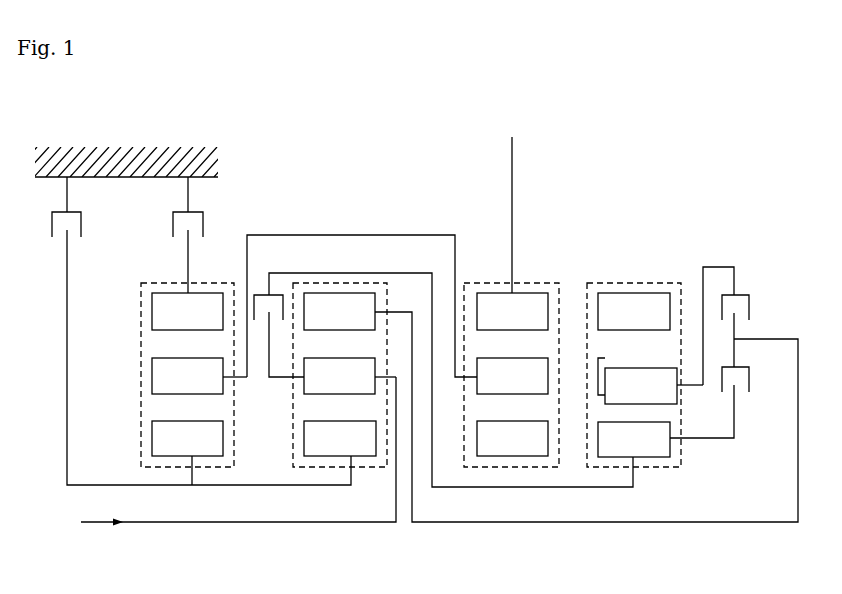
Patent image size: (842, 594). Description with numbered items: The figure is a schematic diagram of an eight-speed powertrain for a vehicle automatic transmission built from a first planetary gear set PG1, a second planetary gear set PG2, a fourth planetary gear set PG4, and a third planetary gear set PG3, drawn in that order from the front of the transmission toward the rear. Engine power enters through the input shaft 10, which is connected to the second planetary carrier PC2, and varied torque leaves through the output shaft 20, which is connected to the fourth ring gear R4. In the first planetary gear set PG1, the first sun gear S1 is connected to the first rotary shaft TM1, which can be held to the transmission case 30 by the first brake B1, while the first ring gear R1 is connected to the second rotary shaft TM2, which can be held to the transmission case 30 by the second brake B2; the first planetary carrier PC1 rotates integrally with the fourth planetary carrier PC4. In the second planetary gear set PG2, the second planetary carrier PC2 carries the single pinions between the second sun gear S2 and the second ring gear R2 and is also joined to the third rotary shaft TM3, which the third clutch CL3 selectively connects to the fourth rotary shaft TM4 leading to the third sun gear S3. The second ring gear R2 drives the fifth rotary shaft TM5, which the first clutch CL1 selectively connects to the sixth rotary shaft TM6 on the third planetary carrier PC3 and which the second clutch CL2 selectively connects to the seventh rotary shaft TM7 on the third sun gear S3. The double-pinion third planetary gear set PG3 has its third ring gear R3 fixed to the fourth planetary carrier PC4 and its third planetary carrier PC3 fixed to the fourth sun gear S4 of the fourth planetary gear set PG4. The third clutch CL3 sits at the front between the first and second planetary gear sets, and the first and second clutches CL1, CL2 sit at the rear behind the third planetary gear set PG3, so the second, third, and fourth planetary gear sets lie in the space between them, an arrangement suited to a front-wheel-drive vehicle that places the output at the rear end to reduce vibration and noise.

The input shaft 10 is at (98, 522).
The output shaft 20 is at (513, 173).
The transmission case 30 is at (135, 162).
The first brake B1 is at (49, 207).
The second brake B2 is at (200, 207).
The first clutch CL1 is at (754, 331).
The second clutch CL2 is at (754, 381).
The third clutch CL3 is at (440, 366).
The first planetary gear set PG1 is at (196, 429).
The second planetary gear set PG2 is at (320, 430).
The third planetary gear set PG3 is at (649, 430).
The fourth planetary gear set PG4 is at (472, 430).
The first sun gear S1 is at (187, 453).
The second sun gear S2 is at (340, 438).
The third sun gear S3 is at (634, 439).
The fourth sun gear S4 is at (512, 438).
The first planetary carrier PC1 is at (243, 378).
The second planetary carrier PC2 is at (283, 378).
The third planetary carrier PC3 is at (688, 387).
The fourth planetary carrier PC4 is at (457, 378).
The first ring gear R1 is at (187, 311).
The second ring gear R2 is at (339, 311).
The third ring gear R3 is at (634, 311).
The fourth ring gear R4 is at (512, 311).
The first rotary shaft TM1 is at (93, 483).
The second rotary shaft TM2 is at (188, 252).
The third rotary shaft TM3 is at (269, 345).
The fourth rotary shaft TM4 is at (343, 272).
The fifth rotary shaft TM5 is at (695, 524).
The sixth rotary shaft TM6 is at (718, 267).
The seventh rotary shaft TM7 is at (735, 438).